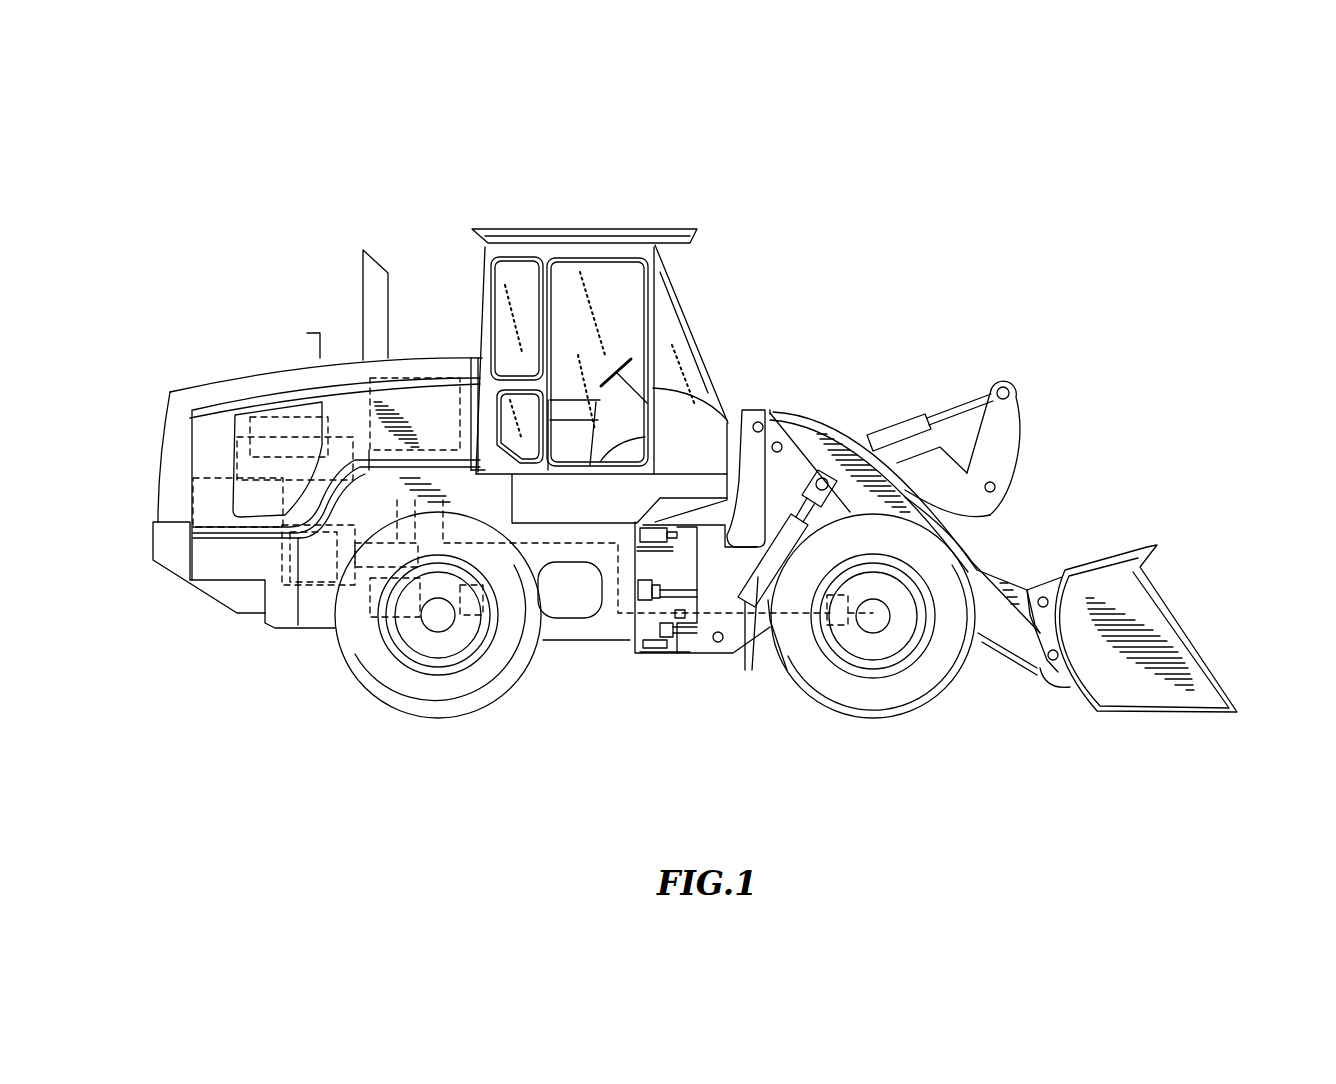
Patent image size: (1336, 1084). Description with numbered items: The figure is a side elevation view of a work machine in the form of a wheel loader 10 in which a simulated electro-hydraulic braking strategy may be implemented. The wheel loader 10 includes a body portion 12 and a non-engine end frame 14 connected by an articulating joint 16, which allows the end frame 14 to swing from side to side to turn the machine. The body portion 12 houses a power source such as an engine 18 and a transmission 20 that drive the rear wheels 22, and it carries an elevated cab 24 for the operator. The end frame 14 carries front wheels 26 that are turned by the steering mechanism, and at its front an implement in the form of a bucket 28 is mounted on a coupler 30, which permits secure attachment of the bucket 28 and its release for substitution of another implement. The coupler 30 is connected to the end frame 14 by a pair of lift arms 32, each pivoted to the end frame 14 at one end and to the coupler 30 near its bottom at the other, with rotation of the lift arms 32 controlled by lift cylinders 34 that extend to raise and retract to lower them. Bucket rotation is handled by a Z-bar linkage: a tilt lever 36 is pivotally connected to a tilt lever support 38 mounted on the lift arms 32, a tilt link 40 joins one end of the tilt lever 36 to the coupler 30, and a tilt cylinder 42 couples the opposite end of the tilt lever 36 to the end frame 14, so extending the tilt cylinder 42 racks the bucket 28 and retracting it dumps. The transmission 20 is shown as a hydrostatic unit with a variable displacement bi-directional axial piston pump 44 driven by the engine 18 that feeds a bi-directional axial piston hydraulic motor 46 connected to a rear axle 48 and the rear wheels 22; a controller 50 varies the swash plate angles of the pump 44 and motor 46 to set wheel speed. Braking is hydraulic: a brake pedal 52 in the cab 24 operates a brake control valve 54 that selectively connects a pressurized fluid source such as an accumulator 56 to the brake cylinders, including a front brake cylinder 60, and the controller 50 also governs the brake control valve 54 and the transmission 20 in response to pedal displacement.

The wheel loader 10 is at (285, 182).
The body portion 12 is at (248, 603).
The non-engine end frame 14 is at (771, 285).
The articulating joint 16 is at (653, 643).
The engine 18 is at (212, 567).
The transmission 20 is at (293, 593).
The rear wheels 22 is at (403, 692).
The cab 24 is at (617, 240).
The front wheels 26 is at (875, 693).
The bucket 28 is at (1180, 630).
The coupler 30 is at (1068, 688).
The lift arms 32 is at (830, 437).
The lift cylinders 34 is at (750, 612).
The tilt lever 36 is at (1005, 440).
The tilt lever support 38 is at (945, 477).
The tilt link 40 is at (1003, 583).
The tilt cylinder 42 is at (878, 427).
The axial piston pump 44 is at (325, 592).
The axial piston hydraulic motor 46 is at (383, 617).
The rear axle 48 is at (440, 620).
The controller 50 is at (278, 413).
The brake pedal 52 is at (620, 462).
The brake control valve 54 is at (453, 477).
The accumulator 56 is at (407, 373).
The front brake cylinder 60 is at (843, 620).